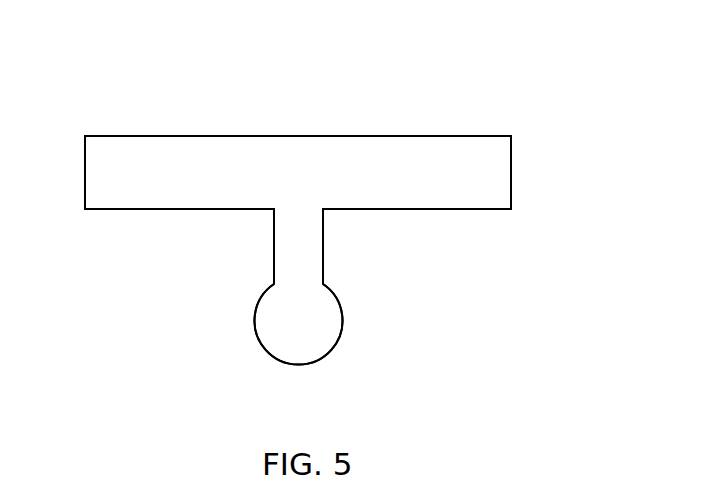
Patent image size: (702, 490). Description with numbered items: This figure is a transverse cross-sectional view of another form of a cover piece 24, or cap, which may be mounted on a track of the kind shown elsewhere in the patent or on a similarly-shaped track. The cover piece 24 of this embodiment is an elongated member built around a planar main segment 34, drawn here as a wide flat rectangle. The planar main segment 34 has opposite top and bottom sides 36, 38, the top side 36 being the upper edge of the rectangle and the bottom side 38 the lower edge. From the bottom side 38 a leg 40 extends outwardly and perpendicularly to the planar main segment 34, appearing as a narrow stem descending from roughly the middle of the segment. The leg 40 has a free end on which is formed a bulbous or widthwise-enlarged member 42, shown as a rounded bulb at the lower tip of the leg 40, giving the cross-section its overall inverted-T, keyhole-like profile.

The cover piece 24 is at (322, 98).
The planar main segment 34 is at (477, 136).
The top side 36 is at (141, 136).
The bottom side 38 is at (106, 210).
The leg 40 is at (323, 253).
The bulbous member 42 is at (334, 347).